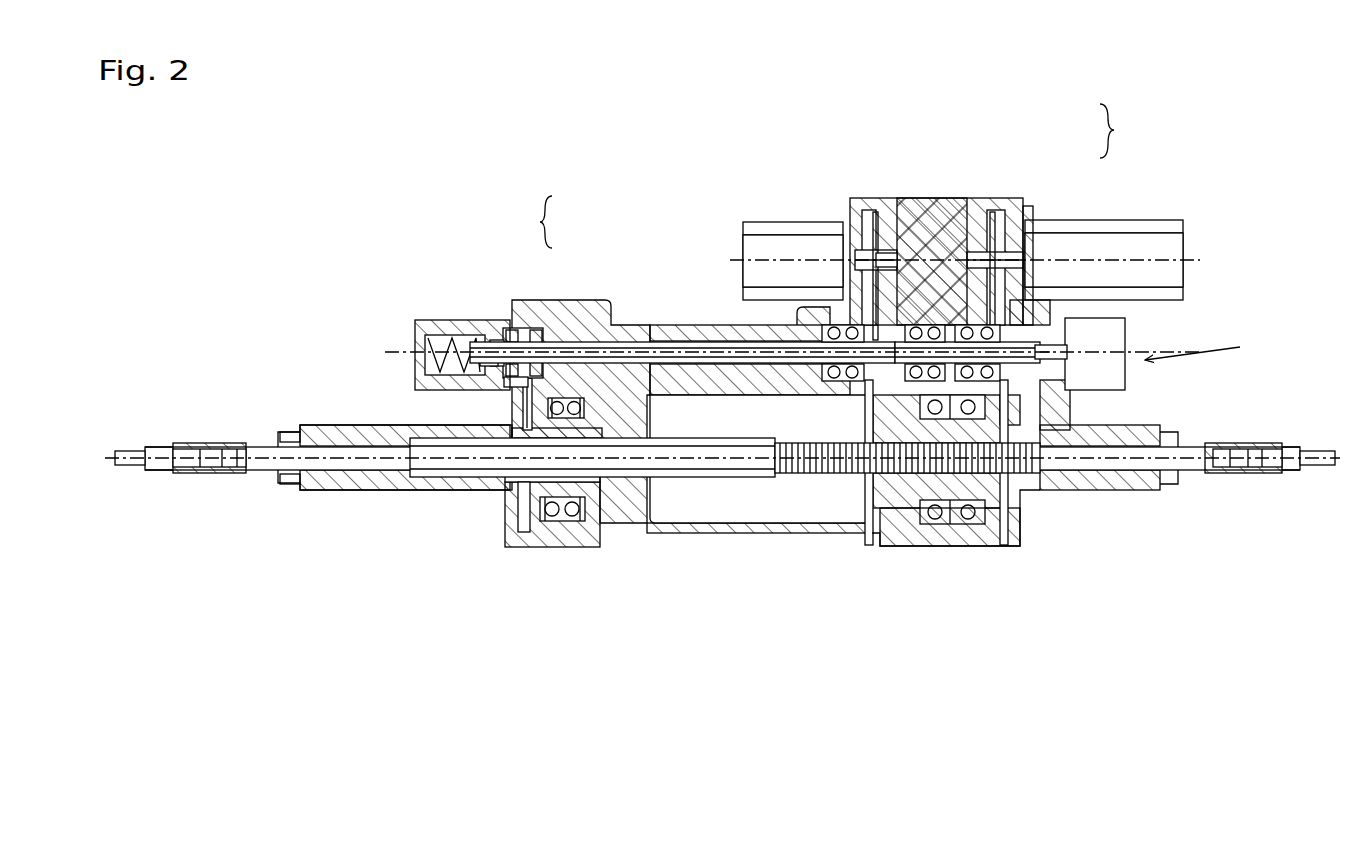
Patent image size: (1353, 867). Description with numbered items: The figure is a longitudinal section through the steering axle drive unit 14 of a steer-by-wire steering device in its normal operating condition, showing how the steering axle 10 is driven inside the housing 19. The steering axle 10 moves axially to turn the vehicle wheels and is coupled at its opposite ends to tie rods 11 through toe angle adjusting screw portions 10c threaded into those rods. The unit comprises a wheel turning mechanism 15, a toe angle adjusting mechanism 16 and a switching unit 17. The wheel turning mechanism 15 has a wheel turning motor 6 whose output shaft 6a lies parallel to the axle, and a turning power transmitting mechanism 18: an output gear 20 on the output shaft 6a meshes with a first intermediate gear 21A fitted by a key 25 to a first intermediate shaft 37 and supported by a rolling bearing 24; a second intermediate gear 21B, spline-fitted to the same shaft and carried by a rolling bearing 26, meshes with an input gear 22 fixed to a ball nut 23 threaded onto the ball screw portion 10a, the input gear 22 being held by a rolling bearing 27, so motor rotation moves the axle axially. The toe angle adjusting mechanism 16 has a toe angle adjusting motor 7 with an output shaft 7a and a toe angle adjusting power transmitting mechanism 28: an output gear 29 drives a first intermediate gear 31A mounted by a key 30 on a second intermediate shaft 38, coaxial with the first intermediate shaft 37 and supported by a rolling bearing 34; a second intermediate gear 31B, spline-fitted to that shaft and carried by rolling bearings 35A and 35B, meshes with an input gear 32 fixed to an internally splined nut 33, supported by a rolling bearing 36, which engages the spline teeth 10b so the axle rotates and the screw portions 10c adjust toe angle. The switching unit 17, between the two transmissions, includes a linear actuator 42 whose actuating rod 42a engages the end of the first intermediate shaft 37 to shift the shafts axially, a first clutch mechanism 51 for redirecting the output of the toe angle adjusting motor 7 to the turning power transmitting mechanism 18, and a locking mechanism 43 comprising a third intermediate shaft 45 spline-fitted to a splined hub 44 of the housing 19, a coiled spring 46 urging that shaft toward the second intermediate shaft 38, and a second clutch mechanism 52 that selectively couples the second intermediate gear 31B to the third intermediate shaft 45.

The steering axle drive unit 14 is at (430, 172).
The steering axle 10 is at (730, 482).
The ball screw portion 10a is at (852, 478).
The spline teeth 10b is at (665, 462).
The toe angle adjusting screw portions 10c is at (210, 475).
The tie rods 11 is at (160, 448).
The input gear 32 is at (505, 432).
The internally splined nut 33 is at (592, 500).
The rolling bearing 36 is at (553, 524).
The second intermediate gear 31B is at (560, 397).
The rolling bearing 35B is at (524, 385).
The rolling bearing 35A is at (536, 328).
The second clutch mechanism 52 is at (512, 330).
The locking mechanism 43 is at (496, 340).
The splined hub 44 is at (504, 382).
The third intermediate shaft 45 is at (484, 346).
The coiled spring 46 is at (428, 336).
The rolling bearing 34 is at (800, 320).
The second intermediate shaft 38 is at (660, 342).
The first intermediate gear 31A is at (832, 325).
The key 30 is at (835, 348).
The housing 19 is at (860, 200).
The output gear 29 is at (892, 202).
The first clutch mechanism 51 is at (873, 225).
The output gear 20 is at (992, 220).
The output shaft 7a is at (890, 253).
The rolling bearing 26 is at (970, 325).
The second intermediate gear 21B is at (925, 325).
The input gear 22 is at (900, 365).
The toe angle adjusting motor 7 is at (740, 238).
The toe angle adjusting power transmitting mechanism 28 is at (690, 302).
The toe angle adjusting mechanism 16 is at (530, 222).
The wheel turning motor 6 is at (1078, 220).
The turning power transmitting mechanism 18 is at (975, 220).
The wheel turning mechanism 15 is at (1124, 131).
The rolling bearing 24 is at (1090, 300).
The output shaft 6a is at (1023, 212).
The first intermediate shaft 37 is at (1020, 312).
The ball nut 23 is at (873, 415).
The rolling bearing 27 is at (935, 526).
The first intermediate gear 21A is at (1003, 400).
The key 25 is at (1050, 388).
The linear actuator 42 is at (1115, 340).
The actuating rod 42a is at (1060, 357).
The switching unit 17 is at (1210, 343).